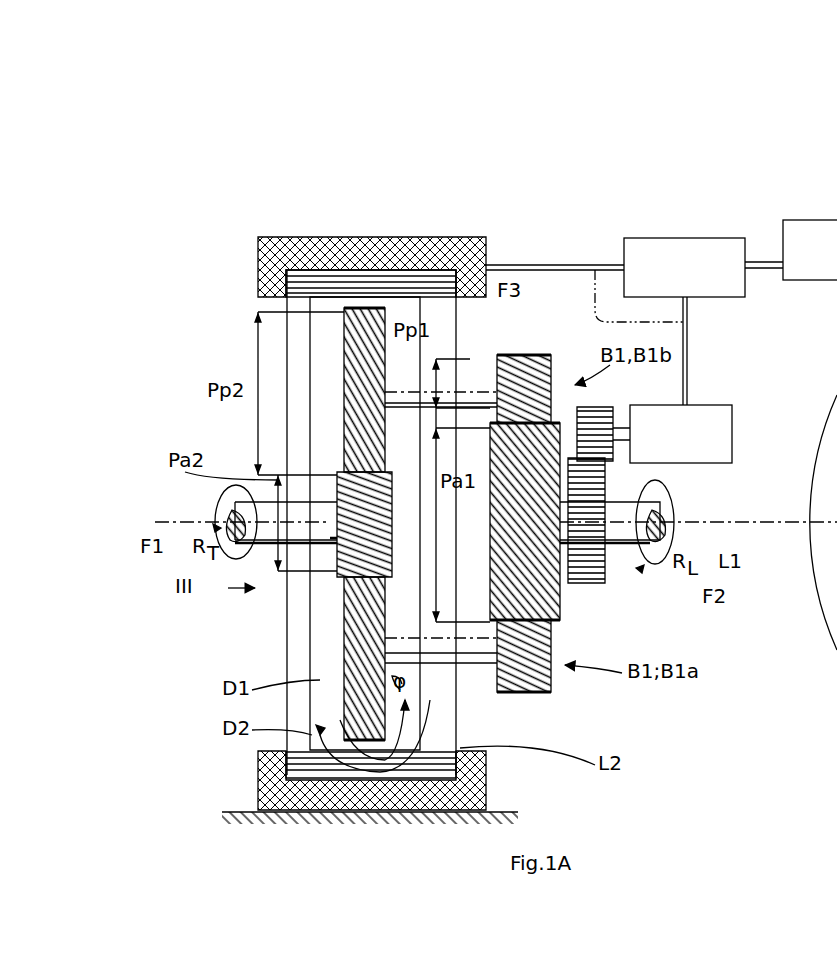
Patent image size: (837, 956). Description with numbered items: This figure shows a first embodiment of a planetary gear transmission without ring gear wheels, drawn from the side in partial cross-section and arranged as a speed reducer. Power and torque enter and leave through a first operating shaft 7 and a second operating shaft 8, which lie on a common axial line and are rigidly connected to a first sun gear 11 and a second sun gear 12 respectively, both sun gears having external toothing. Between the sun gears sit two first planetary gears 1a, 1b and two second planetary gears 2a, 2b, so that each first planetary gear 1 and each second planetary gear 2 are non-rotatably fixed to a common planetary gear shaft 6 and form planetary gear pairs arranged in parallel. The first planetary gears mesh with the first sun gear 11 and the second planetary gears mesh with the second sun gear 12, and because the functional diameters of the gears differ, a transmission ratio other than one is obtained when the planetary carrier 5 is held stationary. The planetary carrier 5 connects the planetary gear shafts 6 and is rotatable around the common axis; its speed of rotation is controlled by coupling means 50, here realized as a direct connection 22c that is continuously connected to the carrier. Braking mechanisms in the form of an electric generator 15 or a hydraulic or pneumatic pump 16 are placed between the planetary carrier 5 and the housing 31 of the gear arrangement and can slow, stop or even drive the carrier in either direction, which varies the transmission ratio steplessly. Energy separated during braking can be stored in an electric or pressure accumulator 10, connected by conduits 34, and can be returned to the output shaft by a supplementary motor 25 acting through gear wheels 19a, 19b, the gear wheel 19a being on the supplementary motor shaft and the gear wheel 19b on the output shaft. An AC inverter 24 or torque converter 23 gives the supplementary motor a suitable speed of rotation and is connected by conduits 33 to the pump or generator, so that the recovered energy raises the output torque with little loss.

The first planetary gear 1 is at (547, 373).
The first planetary gear 1a is at (530, 692).
The first planetary gear 1b is at (575, 345).
The second planetary gear 2 is at (281, 390).
The second planetary gear 2a is at (360, 635).
The second planetary gear 2b is at (344, 372).
The planetary carrier 5 is at (440, 740).
The planetary gear shaft 6 is at (470, 375).
The first operating shaft 7 is at (326, 555).
The second operating shaft 8 is at (605, 560).
The electric or pressure accumulator 10 is at (818, 262).
The first sun gear 11 is at (560, 595).
The second sun gear 12 is at (395, 500).
The electric generator 15 is at (385, 236).
The hydraulic or pneumatic pump 16 is at (430, 237).
The gear wheel 19a is at (600, 407).
The gear wheel 19b is at (600, 583).
The direct connection 22c is at (268, 768).
The torque converter 23 is at (699, 459).
The AC inverter 24 is at (696, 279).
The supplementary motor 25 is at (681, 434).
The housing 31 is at (372, 855).
The conduits 33 is at (555, 265).
The conduits 34 is at (762, 262).
The coupling means 50 is at (632, 470).